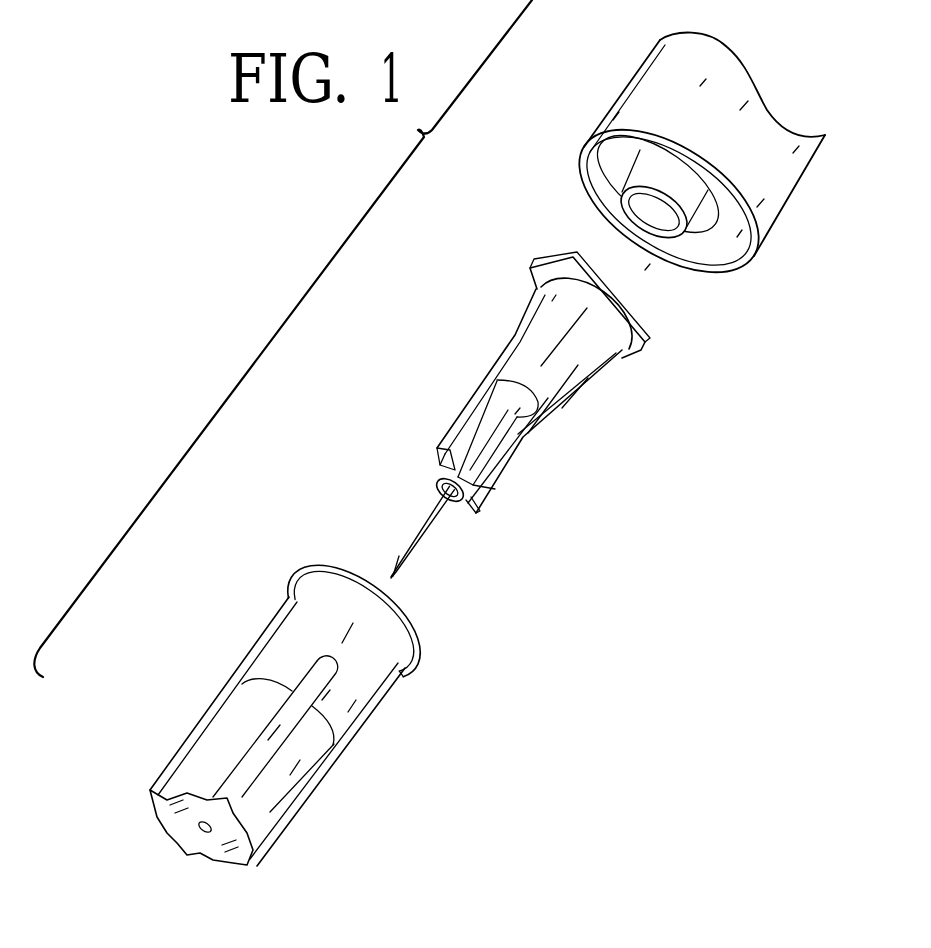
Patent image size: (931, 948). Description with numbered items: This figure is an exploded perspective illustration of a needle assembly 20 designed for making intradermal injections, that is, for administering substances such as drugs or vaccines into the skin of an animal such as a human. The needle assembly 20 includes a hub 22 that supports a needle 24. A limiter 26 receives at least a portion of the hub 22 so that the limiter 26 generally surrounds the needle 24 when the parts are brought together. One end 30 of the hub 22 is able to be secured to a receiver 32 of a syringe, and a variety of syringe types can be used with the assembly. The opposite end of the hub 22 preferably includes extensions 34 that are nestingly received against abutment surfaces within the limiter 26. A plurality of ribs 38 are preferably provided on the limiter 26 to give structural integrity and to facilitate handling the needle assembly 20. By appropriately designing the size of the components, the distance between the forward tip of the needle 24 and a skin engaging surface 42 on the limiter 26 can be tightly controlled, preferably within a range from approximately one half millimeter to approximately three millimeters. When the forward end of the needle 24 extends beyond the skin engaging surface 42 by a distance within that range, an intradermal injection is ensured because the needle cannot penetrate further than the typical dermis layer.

The needle assembly 20 is at (515, 575).
The hub 22 is at (587, 340).
The needle 24 is at (420, 517).
The limiter 26 is at (363, 667).
The end of the hub 30 is at (540, 248).
The receiver 32 is at (763, 180).
The extensions 34 is at (468, 411).
The ribs 38 is at (203, 722).
The skin engaging surface 42 is at (163, 833).